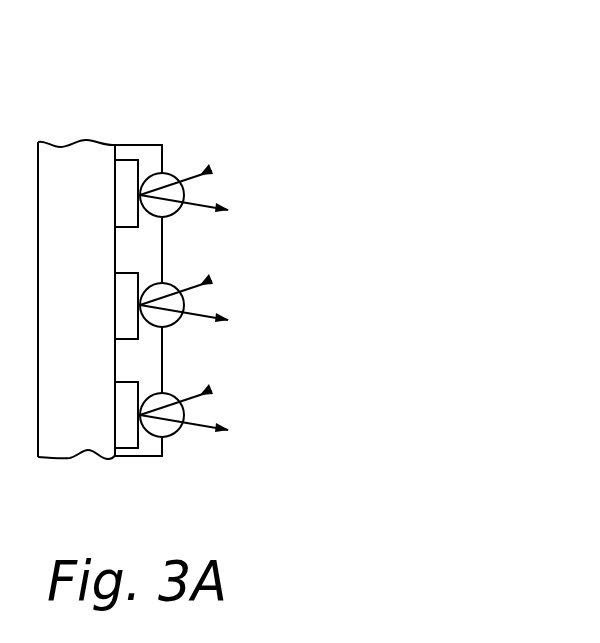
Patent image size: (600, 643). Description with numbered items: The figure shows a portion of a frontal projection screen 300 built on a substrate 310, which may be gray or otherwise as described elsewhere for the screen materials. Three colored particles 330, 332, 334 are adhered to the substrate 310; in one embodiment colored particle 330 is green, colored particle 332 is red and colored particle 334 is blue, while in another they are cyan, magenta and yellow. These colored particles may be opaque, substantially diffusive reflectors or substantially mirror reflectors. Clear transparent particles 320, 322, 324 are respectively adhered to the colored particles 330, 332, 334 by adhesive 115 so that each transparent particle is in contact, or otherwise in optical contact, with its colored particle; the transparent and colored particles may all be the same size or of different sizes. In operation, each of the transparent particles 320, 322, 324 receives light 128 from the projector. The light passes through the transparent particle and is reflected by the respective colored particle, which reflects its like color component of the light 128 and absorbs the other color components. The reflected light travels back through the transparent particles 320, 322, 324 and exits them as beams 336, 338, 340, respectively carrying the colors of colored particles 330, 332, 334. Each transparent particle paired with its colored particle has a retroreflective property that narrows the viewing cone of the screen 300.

The frontal projection screen 300 is at (300, 73).
The substrate 310 is at (97, 257).
The adhesive 115 is at (148, 447).
The colored particle 330 is at (128, 168).
The colored particle 332 is at (130, 322).
The colored particle 334 is at (127, 442).
The clear transparent particle 320 is at (172, 172).
The clear transparent particle 322 is at (172, 282).
The clear transparent particle 324 is at (172, 392).
The light 128 is at (200, 176).
The beam 336 is at (230, 210).
The beam 338 is at (230, 320).
The beam 340 is at (230, 430).